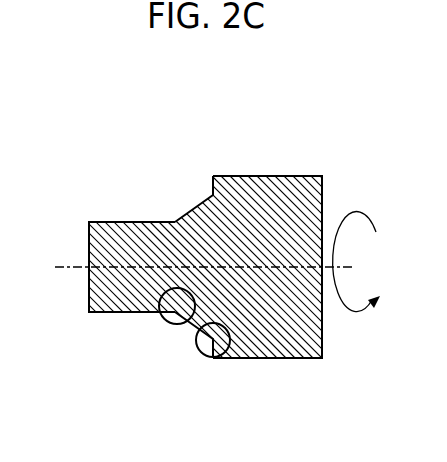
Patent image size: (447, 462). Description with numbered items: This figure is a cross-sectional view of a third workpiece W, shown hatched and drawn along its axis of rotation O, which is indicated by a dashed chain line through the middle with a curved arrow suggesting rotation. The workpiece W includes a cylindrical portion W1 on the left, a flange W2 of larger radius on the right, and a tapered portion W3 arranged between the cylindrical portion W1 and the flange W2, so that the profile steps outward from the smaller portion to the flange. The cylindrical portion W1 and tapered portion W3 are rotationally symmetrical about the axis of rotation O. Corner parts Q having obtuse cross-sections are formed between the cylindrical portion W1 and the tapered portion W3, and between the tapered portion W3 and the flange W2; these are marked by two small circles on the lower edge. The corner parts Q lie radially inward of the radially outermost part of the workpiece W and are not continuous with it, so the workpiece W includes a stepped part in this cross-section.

The workpiece W is at (223, 224).
The cylindrical portion W1 is at (118, 222).
The flange W2 is at (300, 176).
The tapered portion W3 is at (197, 208).
The axis of rotation O is at (68, 268).
The corner part Q is at (171, 327).